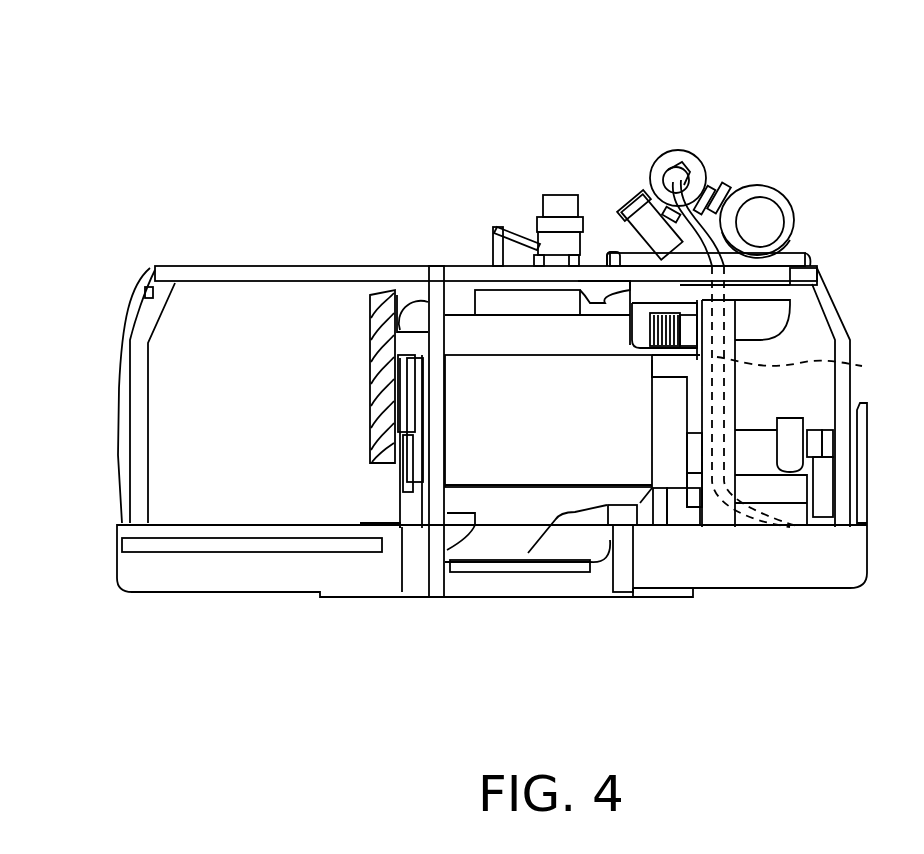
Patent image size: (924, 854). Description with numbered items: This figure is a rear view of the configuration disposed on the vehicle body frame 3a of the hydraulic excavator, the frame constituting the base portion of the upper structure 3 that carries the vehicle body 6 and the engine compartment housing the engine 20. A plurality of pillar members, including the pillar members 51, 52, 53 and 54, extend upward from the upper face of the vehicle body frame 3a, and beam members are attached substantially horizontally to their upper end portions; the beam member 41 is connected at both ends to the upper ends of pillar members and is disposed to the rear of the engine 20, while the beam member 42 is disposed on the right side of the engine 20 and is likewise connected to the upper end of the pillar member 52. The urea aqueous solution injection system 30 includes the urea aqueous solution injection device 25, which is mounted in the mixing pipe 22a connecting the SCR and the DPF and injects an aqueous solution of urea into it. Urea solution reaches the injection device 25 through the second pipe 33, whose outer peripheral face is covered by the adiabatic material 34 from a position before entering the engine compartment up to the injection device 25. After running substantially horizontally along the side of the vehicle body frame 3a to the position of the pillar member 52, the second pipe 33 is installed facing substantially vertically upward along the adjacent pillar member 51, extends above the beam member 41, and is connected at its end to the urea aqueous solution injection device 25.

The upper structure 3 is at (824, 114).
The vehicle body frame 3a is at (795, 585).
The vehicle body 6 is at (245, 258).
The engine 20 is at (477, 393).
The mixing pipe 22a is at (652, 172).
The urea aqueous solution injection device 25 is at (664, 166).
The urea aqueous solution injection system 30 is at (588, 104).
The second pipe 33 is at (677, 152).
The adiabatic material 34 is at (708, 172).
The beam member 41 is at (337, 275).
The beam member 42 is at (820, 270).
The pillar member 51 is at (732, 392).
The pillar member 52 is at (852, 392).
The pillar member 53 is at (438, 597).
The pillar member 54 is at (148, 377).